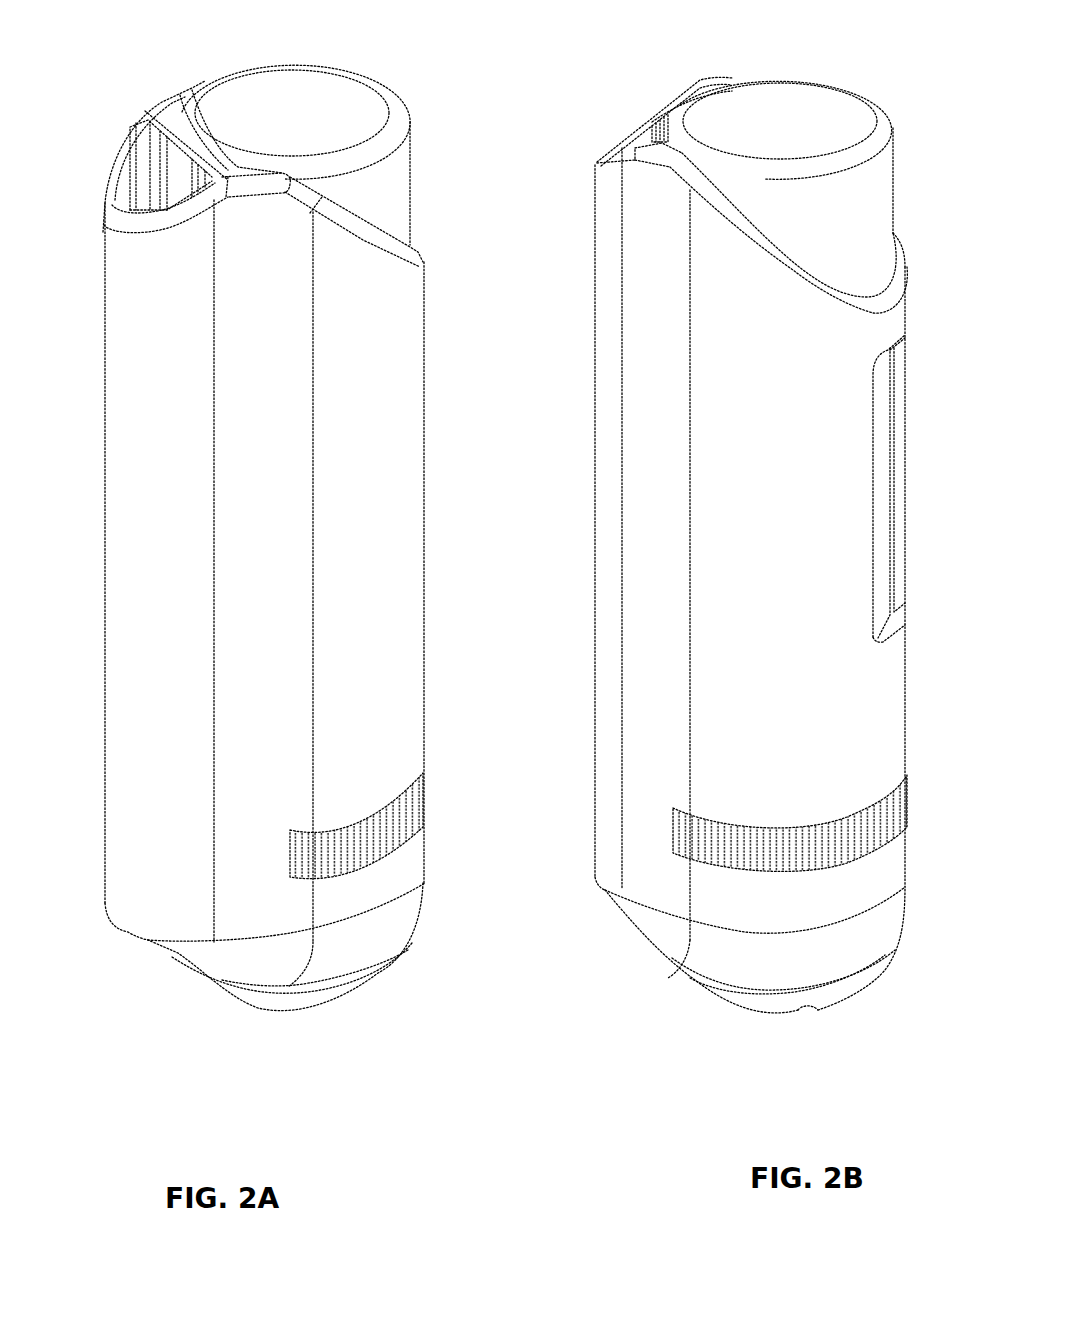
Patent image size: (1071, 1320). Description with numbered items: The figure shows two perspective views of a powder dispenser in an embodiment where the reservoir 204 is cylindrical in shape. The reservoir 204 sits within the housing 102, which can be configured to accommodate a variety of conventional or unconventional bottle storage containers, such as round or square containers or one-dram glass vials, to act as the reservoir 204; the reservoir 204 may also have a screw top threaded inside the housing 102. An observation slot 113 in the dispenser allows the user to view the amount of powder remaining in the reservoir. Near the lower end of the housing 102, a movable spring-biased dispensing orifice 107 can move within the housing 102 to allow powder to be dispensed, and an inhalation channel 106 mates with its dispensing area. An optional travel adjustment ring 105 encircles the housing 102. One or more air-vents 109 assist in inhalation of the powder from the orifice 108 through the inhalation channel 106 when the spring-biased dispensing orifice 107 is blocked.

In FIG. 2A, the housing 102 is at (367, 606).
In FIG. 2B, the housing 102 is at (678, 623).
In FIG. 2A, the travel adjustment ring 105 is at (400, 832).
In FIG. 2B, the travel adjustment ring 105 is at (700, 850).
In FIG. 2A, the inhalation channel 106 is at (127, 727).
In FIG. 2A, the spring-biased dispensing orifice 107 is at (392, 943).
In FIG. 2B, the spring-biased dispensing orifice 107 is at (713, 953).
In FIG. 2A, the orifice 108 is at (135, 183).
In FIG. 2B, the orifice 108 is at (640, 128).
In FIG. 2B, the air-vent 109 is at (796, 1013).
In FIG. 2B, the observation slot 113 is at (883, 475).
In FIG. 2A, the reservoir 204 is at (390, 207).
In FIG. 2B, the reservoir 204 is at (785, 103).